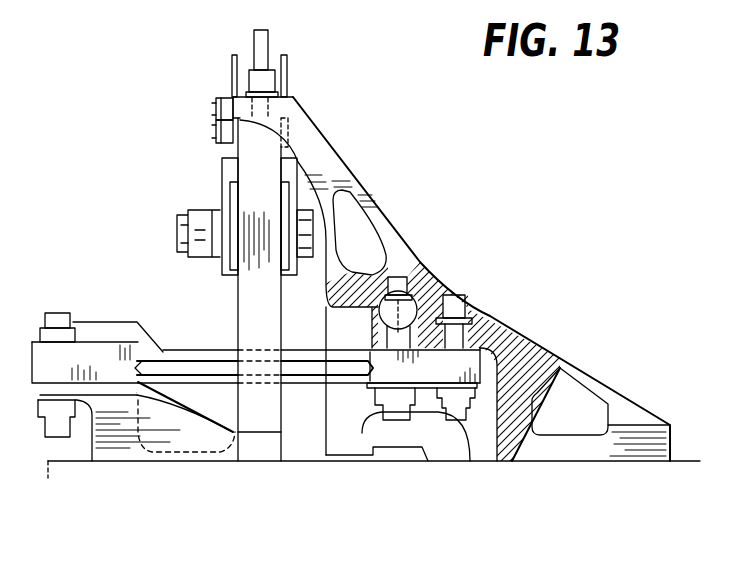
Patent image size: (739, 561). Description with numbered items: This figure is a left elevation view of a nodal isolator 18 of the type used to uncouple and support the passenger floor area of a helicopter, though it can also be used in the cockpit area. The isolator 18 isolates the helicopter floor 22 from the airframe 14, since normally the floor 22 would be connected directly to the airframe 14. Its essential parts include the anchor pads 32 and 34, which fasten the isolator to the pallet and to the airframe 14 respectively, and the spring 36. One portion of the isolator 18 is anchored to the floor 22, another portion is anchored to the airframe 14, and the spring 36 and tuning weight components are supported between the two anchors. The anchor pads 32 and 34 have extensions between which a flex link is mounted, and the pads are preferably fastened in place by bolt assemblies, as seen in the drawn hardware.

The airframe 14 is at (592, 463).
The nodal isolator 18 is at (541, 176).
The helicopter floor 22 is at (62, 473).
The anchor pad 32 is at (105, 320).
The anchor pad 34 is at (337, 149).
The spring 36 is at (213, 350).